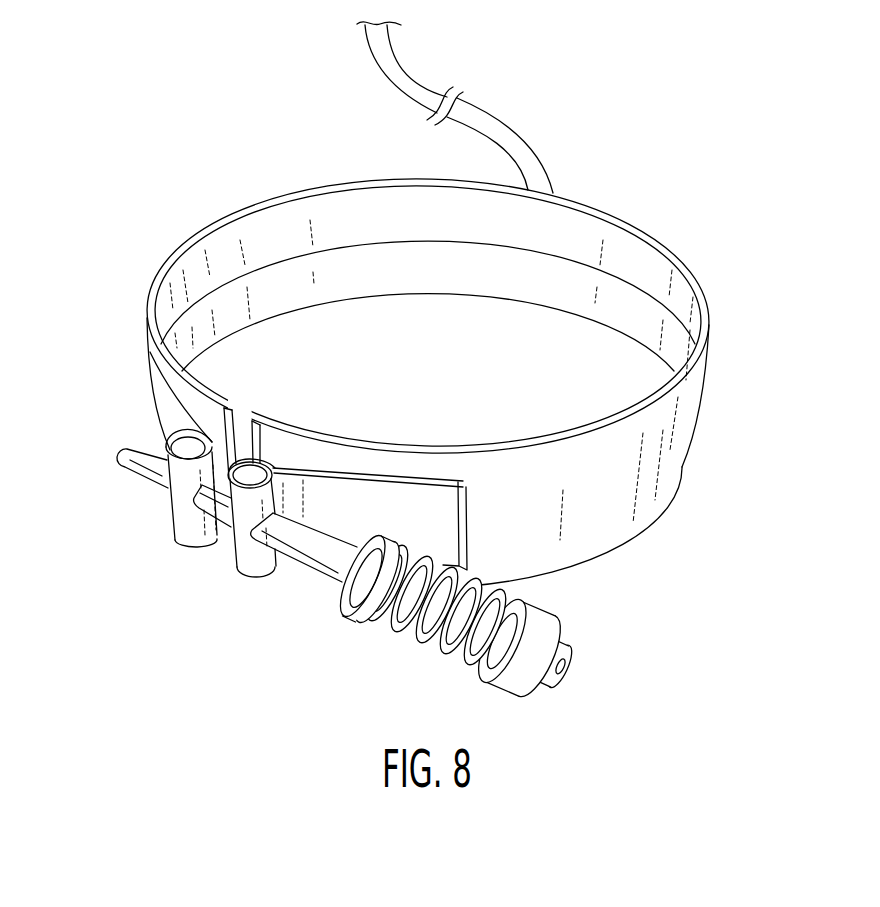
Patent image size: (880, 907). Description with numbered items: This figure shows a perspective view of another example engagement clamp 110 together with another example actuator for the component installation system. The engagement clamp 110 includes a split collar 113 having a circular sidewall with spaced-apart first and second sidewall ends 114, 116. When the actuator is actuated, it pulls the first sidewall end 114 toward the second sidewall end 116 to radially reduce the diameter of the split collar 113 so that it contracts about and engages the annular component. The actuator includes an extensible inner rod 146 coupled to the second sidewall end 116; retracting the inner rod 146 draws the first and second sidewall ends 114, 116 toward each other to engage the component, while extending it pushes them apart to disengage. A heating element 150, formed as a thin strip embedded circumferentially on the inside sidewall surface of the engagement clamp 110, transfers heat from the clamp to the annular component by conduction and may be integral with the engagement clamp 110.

The engagement clamp 110 is at (615, 212).
The split collar 113 is at (240, 429).
The first sidewall end 114 is at (696, 415).
The second sidewall end 116 is at (268, 206).
The inner rod 146 is at (317, 572).
The heating element 150 is at (637, 288).